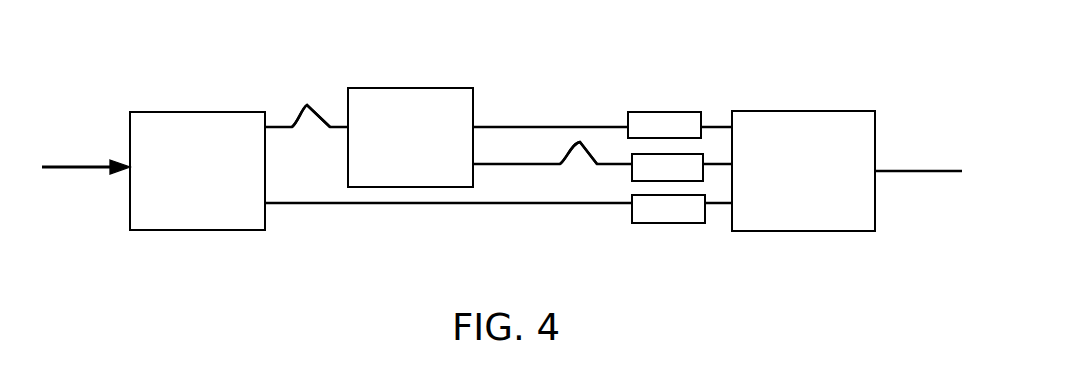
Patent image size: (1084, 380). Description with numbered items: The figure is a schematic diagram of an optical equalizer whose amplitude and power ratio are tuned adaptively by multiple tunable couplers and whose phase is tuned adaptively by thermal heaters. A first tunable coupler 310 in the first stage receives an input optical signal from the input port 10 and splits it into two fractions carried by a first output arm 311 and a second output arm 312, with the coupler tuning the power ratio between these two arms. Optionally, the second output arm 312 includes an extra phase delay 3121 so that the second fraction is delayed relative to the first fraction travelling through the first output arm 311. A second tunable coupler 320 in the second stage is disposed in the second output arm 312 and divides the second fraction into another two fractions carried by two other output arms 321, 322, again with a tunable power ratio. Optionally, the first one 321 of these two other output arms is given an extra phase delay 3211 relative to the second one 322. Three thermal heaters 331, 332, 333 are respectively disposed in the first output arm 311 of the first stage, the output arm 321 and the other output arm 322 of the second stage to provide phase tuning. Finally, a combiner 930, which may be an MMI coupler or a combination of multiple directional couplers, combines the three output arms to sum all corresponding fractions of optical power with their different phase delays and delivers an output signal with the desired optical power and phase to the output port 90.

The input port 10 is at (83, 170).
The first tunable coupler 310 is at (173, 115).
The first output arm 311 is at (310, 203).
The second output arm 312 is at (275, 127).
The extra phase delay 3121 is at (315, 104).
The second tunable coupler 320 is at (423, 92).
The first one of the two other output arms 321 is at (505, 165).
The extra phase delay 3211 is at (566, 147).
The second one of the two other output arms 322 is at (503, 127).
The thermal heater 331 is at (668, 223).
The thermal heater 332 is at (636, 177).
The thermal heater 333 is at (659, 115).
The combiner 930 is at (792, 225).
The output port 90 is at (910, 167).